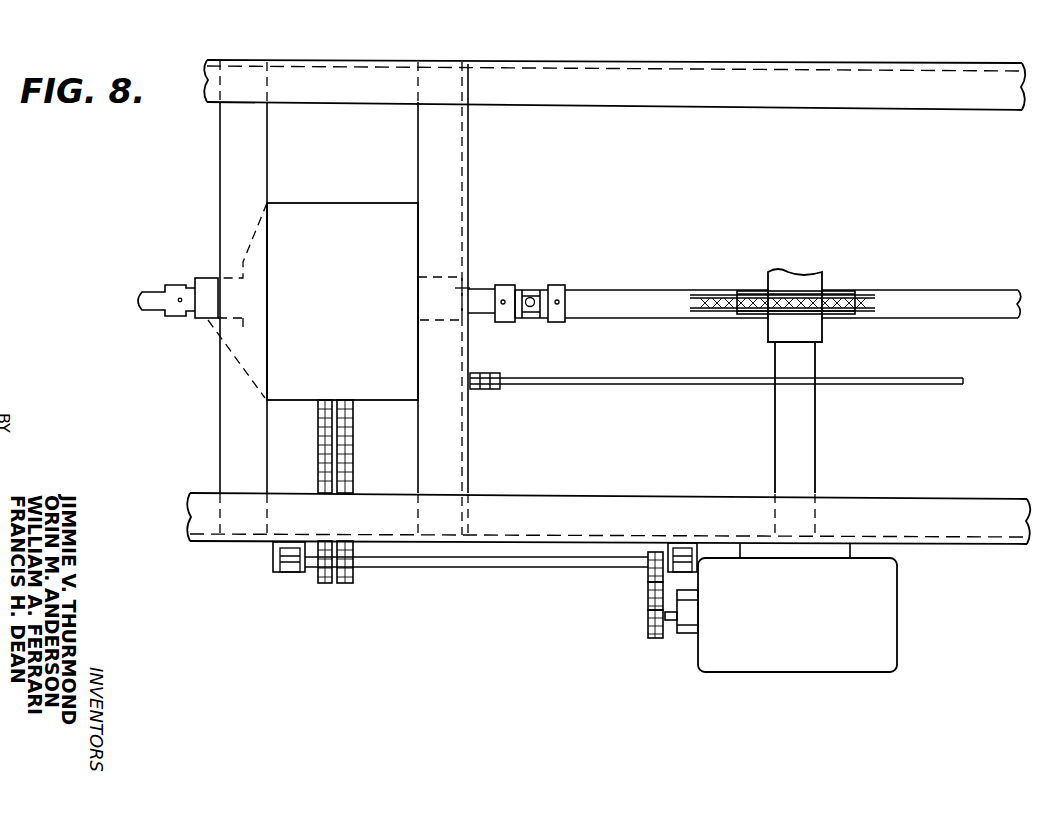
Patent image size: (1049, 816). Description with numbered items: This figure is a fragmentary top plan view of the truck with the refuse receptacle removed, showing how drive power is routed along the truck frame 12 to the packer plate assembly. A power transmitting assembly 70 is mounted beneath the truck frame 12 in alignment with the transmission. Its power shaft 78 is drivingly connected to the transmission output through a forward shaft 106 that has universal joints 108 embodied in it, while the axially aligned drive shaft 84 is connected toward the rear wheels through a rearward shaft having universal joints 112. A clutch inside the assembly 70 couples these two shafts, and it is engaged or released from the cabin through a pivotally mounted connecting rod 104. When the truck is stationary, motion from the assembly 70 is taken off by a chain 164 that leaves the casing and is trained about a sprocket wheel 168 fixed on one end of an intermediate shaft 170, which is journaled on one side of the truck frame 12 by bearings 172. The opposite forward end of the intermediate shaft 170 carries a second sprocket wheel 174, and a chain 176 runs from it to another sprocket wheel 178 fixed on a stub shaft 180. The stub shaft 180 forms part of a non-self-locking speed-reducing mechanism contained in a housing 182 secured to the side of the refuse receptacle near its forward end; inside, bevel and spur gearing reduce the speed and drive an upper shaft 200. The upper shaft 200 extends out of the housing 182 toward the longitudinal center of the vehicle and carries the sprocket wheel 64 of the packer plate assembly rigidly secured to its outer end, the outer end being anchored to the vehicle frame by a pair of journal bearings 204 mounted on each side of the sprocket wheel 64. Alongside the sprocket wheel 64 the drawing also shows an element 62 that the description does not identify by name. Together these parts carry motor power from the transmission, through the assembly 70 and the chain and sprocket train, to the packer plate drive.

The truck frame 12 is at (556, 102).
The power transmitting assembly 70 is at (339, 198).
The drive shaft 84 is at (193, 286).
The universal joints 112 is at (175, 318).
The power shaft 78 is at (477, 296).
The universal joints 108 is at (500, 284).
The forward shaft 106 is at (680, 298).
The chain 62 is at (710, 317).
The sprocket wheel 64 is at (842, 290).
The journal bearings 204 is at (815, 333).
The upper shaft 200 is at (814, 453).
The connecting rod 104 is at (643, 383).
The chain 164 is at (348, 445).
The sprocket wheel 168 is at (358, 582).
The bearings 172 is at (286, 574).
The intermediate shaft 170 is at (479, 569).
The second sprocket wheel 174 is at (650, 570).
The chain 176 is at (650, 595).
The sprocket wheel 178 is at (650, 620).
The stub shaft 180 is at (672, 625).
The housing 182 is at (888, 627).